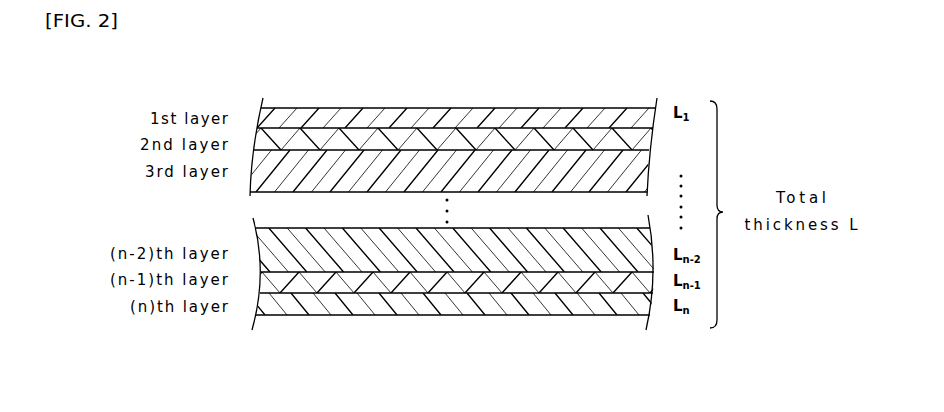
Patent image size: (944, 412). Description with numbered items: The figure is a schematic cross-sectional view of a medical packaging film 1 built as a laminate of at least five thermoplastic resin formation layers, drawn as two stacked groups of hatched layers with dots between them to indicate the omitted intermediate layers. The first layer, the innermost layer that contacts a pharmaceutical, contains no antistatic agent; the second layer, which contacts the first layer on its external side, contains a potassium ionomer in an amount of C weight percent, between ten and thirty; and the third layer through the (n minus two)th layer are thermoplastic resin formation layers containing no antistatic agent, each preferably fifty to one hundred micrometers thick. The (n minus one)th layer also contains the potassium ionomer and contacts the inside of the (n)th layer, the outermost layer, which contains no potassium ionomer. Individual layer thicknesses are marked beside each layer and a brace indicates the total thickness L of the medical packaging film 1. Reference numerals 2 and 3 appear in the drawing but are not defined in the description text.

The medical packaging film 1 is at (531, 343).
The 2nd layer 2 is at (456, 139).
The 3rd layer 3 is at (454, 171).